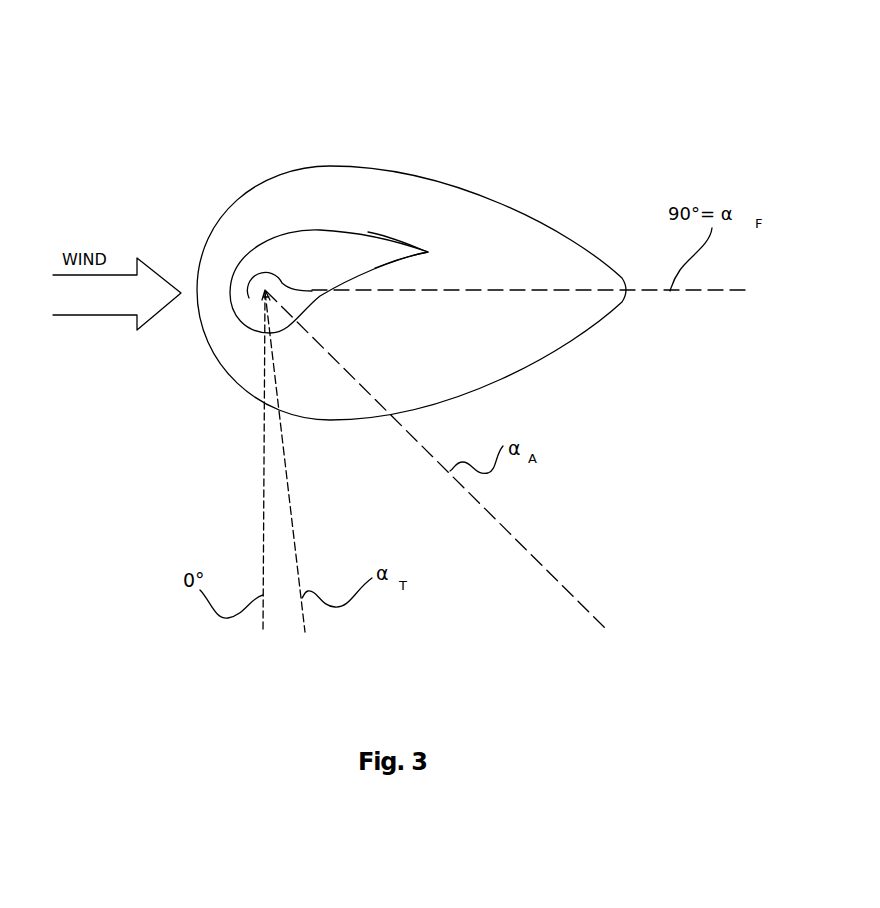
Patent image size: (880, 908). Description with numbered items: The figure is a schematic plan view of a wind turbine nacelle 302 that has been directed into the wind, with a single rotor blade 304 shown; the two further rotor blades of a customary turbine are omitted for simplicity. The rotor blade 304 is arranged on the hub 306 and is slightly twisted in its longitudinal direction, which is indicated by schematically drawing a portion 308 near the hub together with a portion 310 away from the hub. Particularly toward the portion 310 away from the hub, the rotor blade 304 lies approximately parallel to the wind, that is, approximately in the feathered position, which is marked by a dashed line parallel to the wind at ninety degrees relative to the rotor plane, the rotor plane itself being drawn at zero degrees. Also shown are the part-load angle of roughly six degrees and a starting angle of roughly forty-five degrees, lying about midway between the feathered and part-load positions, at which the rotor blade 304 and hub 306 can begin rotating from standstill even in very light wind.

The wind turbine nacelle 302 is at (413, 103).
The rotor blade 304 is at (293, 208).
The hub 306 is at (220, 208).
The portion near the hub 308 is at (368, 232).
The portion away from the hub 310 is at (280, 280).